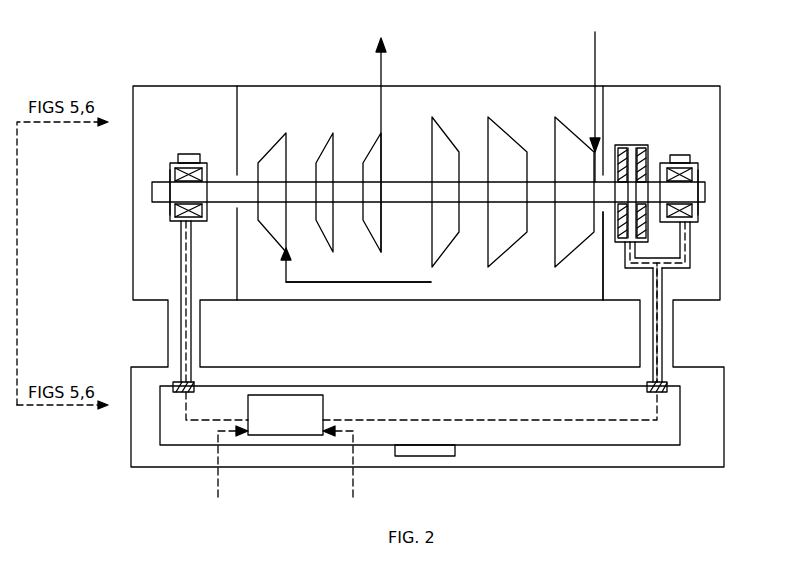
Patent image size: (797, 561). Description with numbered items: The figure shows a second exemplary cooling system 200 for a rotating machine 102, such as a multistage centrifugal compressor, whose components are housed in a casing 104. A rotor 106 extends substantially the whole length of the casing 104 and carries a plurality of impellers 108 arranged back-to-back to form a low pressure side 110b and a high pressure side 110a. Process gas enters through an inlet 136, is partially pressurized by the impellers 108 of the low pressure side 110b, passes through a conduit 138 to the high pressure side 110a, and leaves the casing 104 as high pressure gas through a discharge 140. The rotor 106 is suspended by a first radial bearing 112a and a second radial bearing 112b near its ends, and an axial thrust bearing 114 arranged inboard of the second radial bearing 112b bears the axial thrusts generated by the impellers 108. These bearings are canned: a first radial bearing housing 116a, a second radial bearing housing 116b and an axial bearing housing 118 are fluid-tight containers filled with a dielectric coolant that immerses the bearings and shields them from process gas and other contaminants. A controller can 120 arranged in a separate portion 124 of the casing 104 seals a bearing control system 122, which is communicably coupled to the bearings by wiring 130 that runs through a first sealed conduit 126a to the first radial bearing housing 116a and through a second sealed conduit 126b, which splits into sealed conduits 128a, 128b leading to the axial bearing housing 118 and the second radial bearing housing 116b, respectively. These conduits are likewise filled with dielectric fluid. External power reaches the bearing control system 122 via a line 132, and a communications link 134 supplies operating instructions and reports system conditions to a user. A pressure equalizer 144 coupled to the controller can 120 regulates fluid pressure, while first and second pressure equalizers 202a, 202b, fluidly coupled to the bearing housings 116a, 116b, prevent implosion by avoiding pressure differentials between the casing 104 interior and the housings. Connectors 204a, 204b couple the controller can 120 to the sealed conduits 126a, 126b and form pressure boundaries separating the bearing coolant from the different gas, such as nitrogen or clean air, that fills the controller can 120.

The cooling system 200 is at (75, 64).
The rotating machine 102 is at (468, 106).
The casing 104 is at (285, 86).
The rotor 106 is at (417, 182).
The impellers 108 is at (378, 133).
The high pressure side 110a is at (382, 312).
The low pressure side 110b is at (583, 312).
The first radial bearing 112a is at (218, 146).
The second radial bearing 112b is at (695, 174).
The axial thrust bearing 114 is at (645, 155).
The first radial bearing housing 116a is at (172, 175).
The second radial bearing housing 116b is at (700, 212).
The axial bearing housing 118 is at (607, 233).
The controller can 120 is at (598, 468).
The bearing control system 122 is at (300, 430).
The separate portion 124 is at (705, 367).
The first sealed conduit 126a is at (181, 252).
The second sealed conduit 126b is at (667, 376).
The sealed conduit 128a is at (641, 270).
The sealed conduit 128b is at (675, 267).
The wiring 130 is at (498, 420).
The line 132 is at (218, 460).
The communications link 134 is at (353, 458).
The inlet 136 is at (597, 60).
The conduit 138 is at (340, 282).
The discharge 140 is at (386, 62).
The pressure equalizer 144 is at (428, 456).
The first pressure equalizer 202a is at (182, 155).
The second pressure equalizer 202b is at (688, 155).
The connector 204a is at (193, 392).
The connector 204b is at (647, 390).